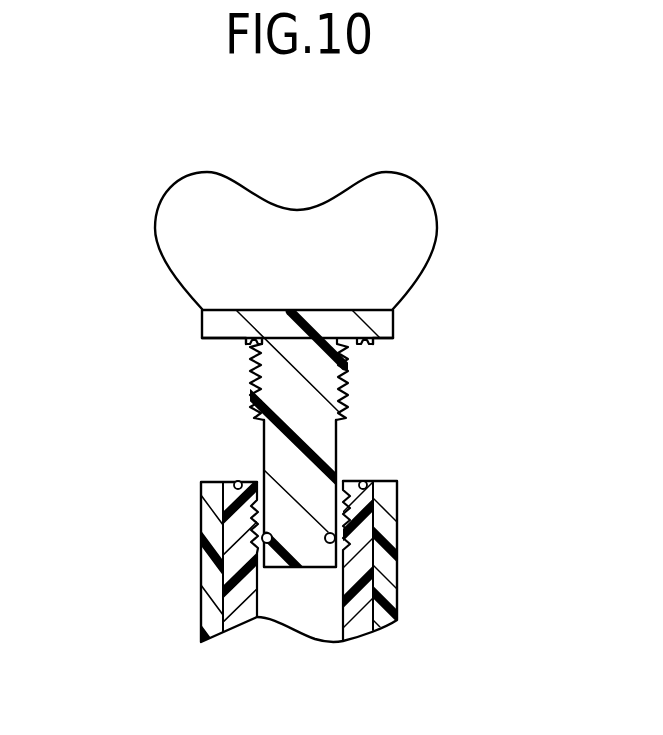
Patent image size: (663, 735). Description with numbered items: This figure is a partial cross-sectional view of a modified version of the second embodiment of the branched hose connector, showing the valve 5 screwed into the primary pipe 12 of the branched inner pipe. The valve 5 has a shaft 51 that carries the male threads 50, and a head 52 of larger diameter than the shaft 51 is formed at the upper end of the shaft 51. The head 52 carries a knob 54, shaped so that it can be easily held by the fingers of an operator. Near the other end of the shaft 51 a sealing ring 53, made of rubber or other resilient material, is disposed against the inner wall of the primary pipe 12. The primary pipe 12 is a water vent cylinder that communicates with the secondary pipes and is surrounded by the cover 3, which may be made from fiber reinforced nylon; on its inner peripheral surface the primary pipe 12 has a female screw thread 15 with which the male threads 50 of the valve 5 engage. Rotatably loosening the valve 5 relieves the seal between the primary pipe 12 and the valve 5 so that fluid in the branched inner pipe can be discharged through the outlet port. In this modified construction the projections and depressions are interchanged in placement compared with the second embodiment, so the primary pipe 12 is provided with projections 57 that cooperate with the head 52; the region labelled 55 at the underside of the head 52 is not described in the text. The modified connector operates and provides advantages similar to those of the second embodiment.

The valve 5 is at (298, 181).
The knob 54 is at (397, 202).
The head 52 is at (378, 322).
The step portion 55 is at (205, 342).
The projections 57 is at (250, 344).
The male threads 50 is at (248, 372).
The shaft 51 is at (298, 475).
The sealing ring 53 is at (331, 543).
The cover 3 is at (208, 612).
The primary pipe 12 is at (240, 618).
The female screw thread 15 is at (238, 481).